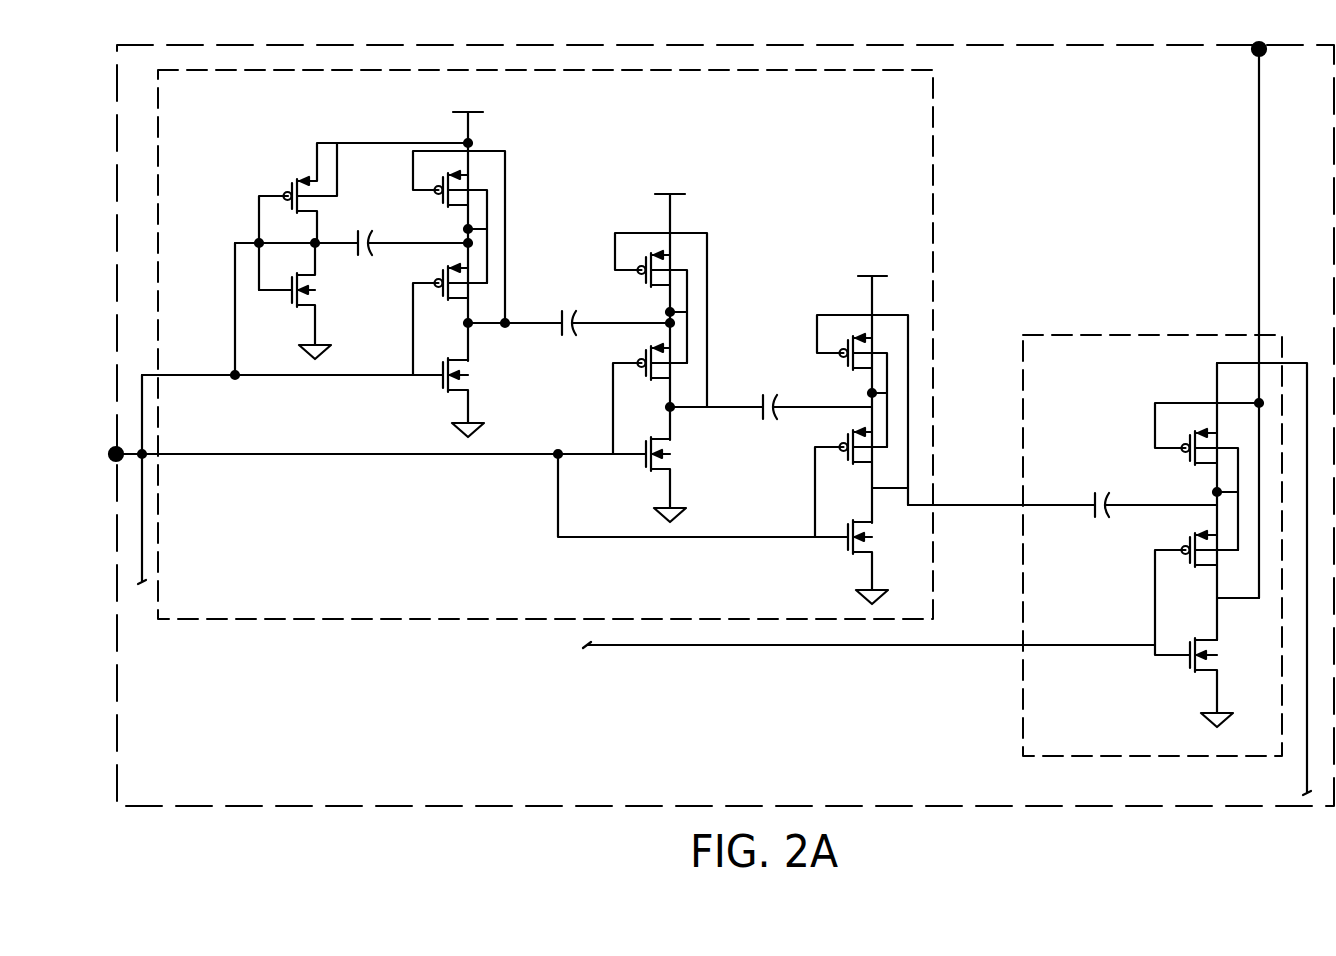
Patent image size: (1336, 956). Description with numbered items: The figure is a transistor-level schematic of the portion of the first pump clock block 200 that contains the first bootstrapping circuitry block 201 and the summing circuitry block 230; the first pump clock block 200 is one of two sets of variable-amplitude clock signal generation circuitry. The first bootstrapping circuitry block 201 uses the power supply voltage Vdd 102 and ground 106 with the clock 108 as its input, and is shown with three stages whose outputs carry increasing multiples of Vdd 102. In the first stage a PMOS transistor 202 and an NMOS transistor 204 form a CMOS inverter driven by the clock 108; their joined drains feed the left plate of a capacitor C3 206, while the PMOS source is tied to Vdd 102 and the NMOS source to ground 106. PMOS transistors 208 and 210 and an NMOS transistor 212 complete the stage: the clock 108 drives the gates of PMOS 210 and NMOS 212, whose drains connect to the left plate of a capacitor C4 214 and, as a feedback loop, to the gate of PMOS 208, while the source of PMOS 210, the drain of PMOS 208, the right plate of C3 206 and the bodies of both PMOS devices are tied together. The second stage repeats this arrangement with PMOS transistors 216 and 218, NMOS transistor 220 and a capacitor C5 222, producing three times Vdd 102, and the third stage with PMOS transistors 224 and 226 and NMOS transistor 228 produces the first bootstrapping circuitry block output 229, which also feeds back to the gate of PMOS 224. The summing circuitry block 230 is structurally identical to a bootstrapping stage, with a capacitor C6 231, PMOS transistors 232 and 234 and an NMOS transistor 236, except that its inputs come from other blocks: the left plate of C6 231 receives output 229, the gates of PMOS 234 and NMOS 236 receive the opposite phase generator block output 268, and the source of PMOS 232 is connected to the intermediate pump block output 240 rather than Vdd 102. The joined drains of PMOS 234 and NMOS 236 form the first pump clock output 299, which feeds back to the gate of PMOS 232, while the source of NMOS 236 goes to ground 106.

The power supply voltage Vdd 102 is at (458, 112).
The ground 106 is at (306, 345).
The clock 108 is at (142, 571).
The first pump clock block 200 is at (172, 775).
The first bootstrapping circuitry block 201 is at (228, 113).
The PMOS transistor 202 is at (280, 176).
The NMOS transistor 204 is at (268, 306).
The capacitor C3 206 is at (371, 280).
The PMOS transistor 208 is at (492, 165).
The PMOS transistor 210 is at (497, 298).
The NMOS transistor 212 is at (497, 377).
The capacitor C4 214 is at (572, 365).
The PMOS transistor 216 is at (612, 285).
The PMOS transistor 218 is at (612, 353).
The NMOS transistor 220 is at (692, 462).
The capacitor C5 222 is at (772, 440).
The PMOS transistor 224 is at (812, 367).
The PMOS transistor 226 is at (810, 435).
The NMOS transistor 228 is at (815, 552).
The first bootstrapping circuitry block output 229 is at (945, 505).
The summing circuitry block 230 is at (1079, 373).
The capacitor C6 231 is at (1103, 542).
The PMOS transistor 232 is at (1155, 462).
The PMOS transistor 234 is at (1152, 541).
The NMOS transistor 236 is at (1152, 662).
The intermediate pump block output 240 is at (1305, 360).
The opposite phase generator block output 268 is at (793, 645).
The first pump clock output 299 is at (1257, 185).